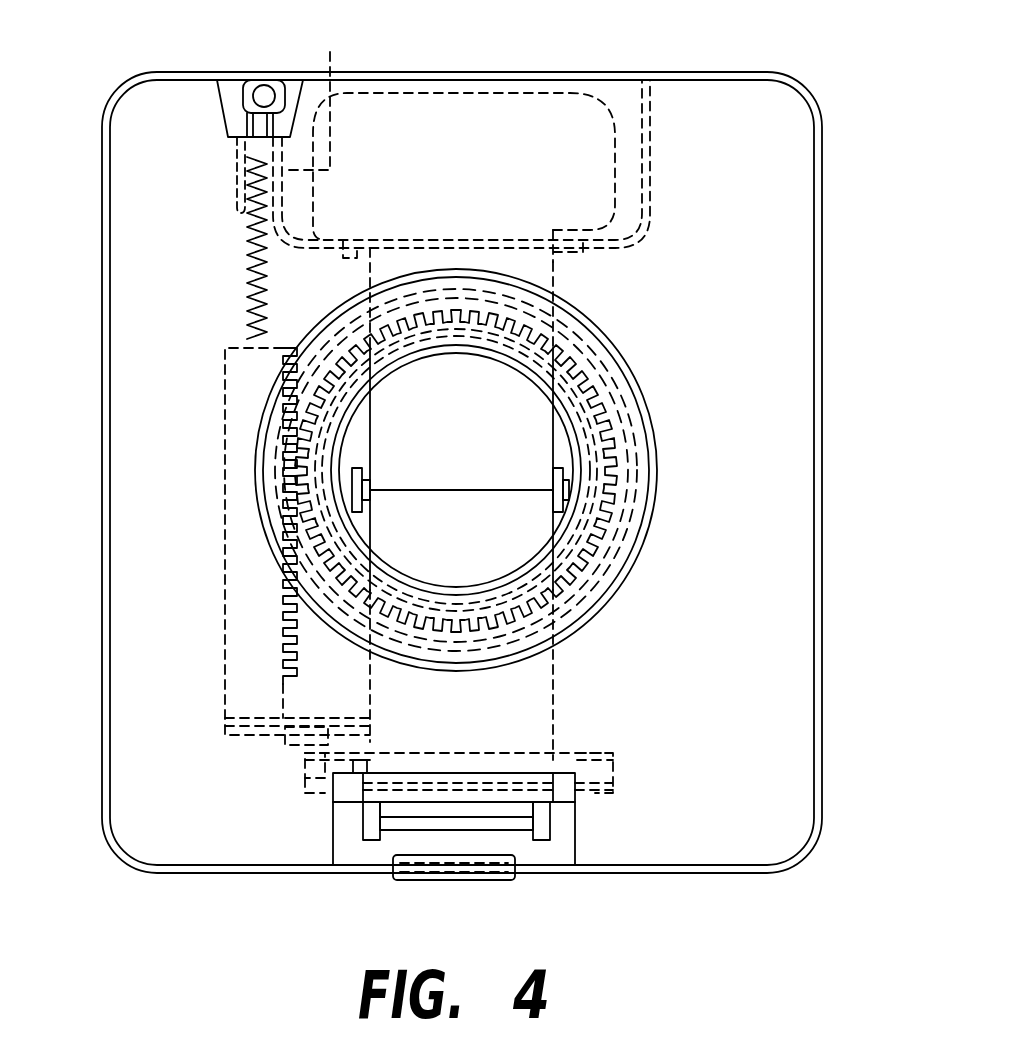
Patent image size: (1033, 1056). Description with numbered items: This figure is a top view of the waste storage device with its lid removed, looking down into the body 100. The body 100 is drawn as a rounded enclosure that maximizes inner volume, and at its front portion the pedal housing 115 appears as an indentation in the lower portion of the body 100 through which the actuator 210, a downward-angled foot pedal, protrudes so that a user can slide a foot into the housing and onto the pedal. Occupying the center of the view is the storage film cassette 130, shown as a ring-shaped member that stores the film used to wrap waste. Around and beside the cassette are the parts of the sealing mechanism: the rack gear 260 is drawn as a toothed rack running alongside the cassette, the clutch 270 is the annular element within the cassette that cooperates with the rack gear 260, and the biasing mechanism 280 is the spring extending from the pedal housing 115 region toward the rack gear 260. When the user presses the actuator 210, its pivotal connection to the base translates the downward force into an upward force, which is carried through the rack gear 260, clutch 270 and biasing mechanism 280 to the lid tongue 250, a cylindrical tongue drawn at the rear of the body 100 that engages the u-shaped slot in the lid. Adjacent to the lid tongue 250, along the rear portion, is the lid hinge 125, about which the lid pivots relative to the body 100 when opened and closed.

The body 100 is at (822, 152).
The pedal housing 115 is at (330, 52).
The actuator 210 is at (477, 137).
The biasing mechanism 280 is at (240, 255).
The rack gear 260 is at (247, 368).
The storage film cassette 130 is at (632, 363).
The clutch 270 is at (667, 425).
The lid tongue 250 is at (575, 821).
The lid hinge 125 is at (493, 880).